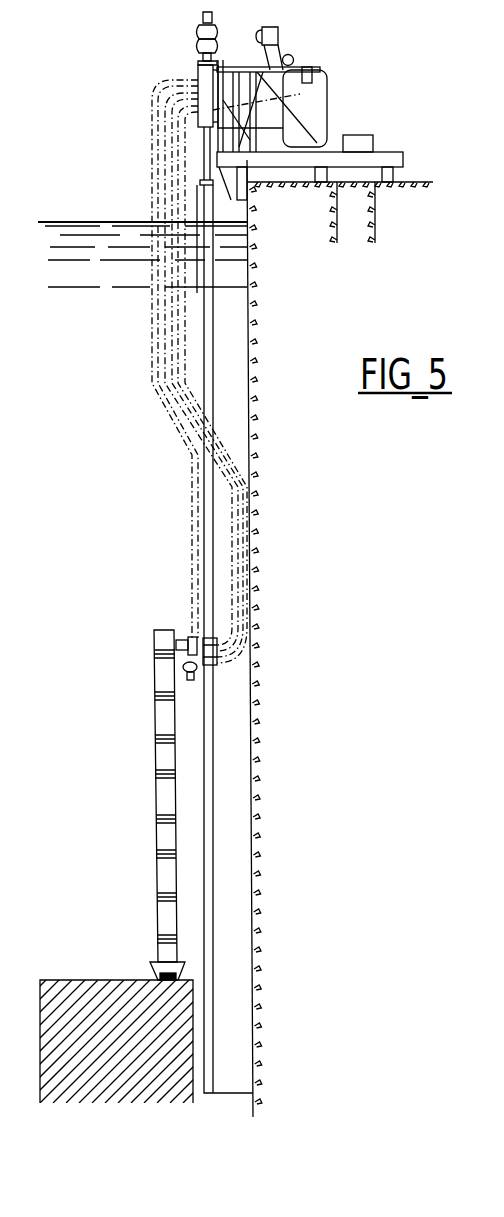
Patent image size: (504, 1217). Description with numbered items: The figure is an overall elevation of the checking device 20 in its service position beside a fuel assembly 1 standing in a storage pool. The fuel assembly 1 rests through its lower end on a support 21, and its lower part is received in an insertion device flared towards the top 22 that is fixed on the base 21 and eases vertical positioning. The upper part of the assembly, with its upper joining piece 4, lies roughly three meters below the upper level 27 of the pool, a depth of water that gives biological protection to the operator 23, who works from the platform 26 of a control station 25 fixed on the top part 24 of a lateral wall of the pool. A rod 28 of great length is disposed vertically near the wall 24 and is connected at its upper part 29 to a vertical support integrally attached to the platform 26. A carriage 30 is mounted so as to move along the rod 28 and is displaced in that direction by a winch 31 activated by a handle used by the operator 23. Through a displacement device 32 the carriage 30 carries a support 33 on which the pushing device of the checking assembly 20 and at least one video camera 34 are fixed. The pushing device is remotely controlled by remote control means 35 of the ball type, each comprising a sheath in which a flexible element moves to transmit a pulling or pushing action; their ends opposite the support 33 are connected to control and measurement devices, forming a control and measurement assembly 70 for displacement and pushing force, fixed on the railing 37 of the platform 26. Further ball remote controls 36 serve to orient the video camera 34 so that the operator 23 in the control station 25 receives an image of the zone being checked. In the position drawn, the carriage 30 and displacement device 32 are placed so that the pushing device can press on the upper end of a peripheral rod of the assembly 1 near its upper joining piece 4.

The fuel assembly 1 is at (155, 697).
The upper joining piece 4 is at (156, 817).
The checking device 20 is at (265, 599).
The support 21 is at (166, 1041).
The insertion device flared towards the top 22 is at (153, 968).
The operator 23 is at (273, 56).
The top part of a lateral wall of the pool 24 is at (275, 208).
The control station 25 is at (345, 81).
The platform 26 is at (307, 170).
The upper level of the pool 27 is at (89, 221).
The rod 28 is at (207, 822).
The upper part of the rod 29 is at (197, 106).
The carriage 30 is at (220, 640).
The winch 31 is at (223, 41).
The displacement device 32 is at (191, 680).
The support 33 is at (185, 656).
The video camera 34 is at (186, 634).
The remote control means 35 is at (222, 471).
The ball remote controls 36 is at (185, 419).
The railing 37 is at (328, 120).
The control and measurement assembly 70 is at (294, 58).